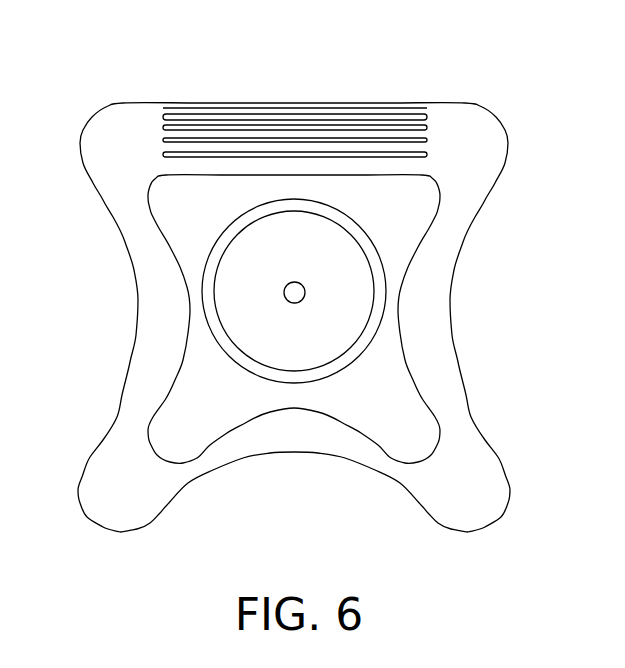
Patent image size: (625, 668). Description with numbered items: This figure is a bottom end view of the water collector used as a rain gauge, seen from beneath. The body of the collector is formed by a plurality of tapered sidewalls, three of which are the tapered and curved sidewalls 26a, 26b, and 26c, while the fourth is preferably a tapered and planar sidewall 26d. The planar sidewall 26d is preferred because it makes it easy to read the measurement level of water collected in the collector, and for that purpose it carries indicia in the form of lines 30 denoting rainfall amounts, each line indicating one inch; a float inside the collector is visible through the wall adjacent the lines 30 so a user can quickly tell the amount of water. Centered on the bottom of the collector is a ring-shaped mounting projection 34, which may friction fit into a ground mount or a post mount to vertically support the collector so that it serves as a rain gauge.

The tapered and curved sidewall 26a is at (455, 343).
The tapered and curved sidewall 26b is at (292, 450).
The tapered and curved sidewall 26c is at (135, 343).
The tapered and planar sidewall 26d is at (213, 103).
The lines 30 is at (362, 108).
The mounting projection 34 is at (378, 274).